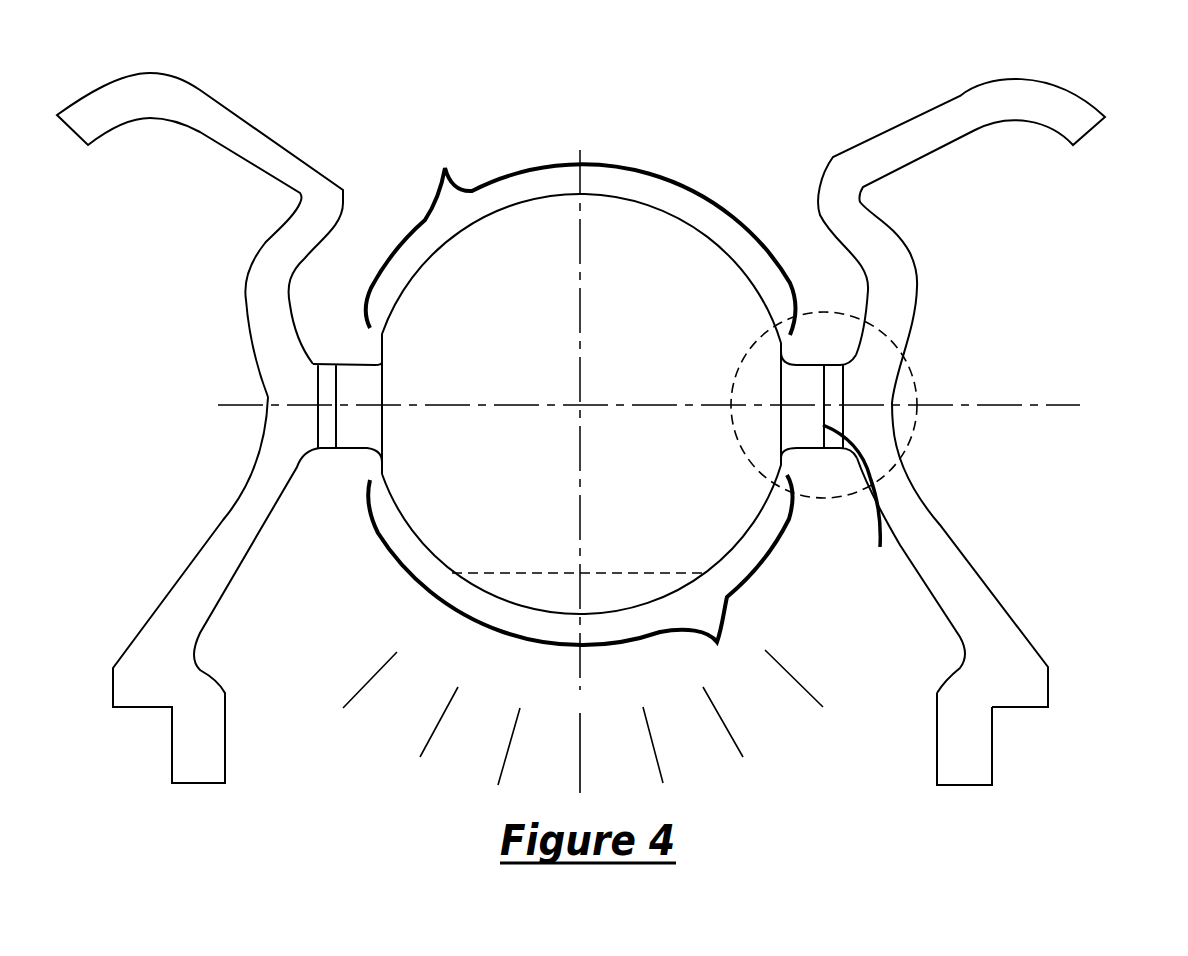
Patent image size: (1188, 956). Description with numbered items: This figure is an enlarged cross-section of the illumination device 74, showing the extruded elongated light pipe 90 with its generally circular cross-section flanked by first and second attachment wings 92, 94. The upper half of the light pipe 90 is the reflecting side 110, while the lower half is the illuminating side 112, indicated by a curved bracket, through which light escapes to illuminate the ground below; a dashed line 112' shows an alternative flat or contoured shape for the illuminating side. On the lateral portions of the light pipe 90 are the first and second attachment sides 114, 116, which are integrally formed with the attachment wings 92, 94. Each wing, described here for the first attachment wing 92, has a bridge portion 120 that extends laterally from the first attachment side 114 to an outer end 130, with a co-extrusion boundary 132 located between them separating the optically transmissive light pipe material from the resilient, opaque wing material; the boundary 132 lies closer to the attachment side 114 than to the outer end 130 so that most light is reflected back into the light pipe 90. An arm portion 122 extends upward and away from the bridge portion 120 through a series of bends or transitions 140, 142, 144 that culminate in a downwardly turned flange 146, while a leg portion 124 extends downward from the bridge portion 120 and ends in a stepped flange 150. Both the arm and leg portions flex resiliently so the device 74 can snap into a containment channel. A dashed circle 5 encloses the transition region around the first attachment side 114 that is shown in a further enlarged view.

The illumination device 74 is at (716, 81).
The elongated light pipe 90 is at (614, 258).
The first attachment wing 92 is at (857, 210).
The second attachment wing 94 is at (227, 535).
The reflecting side 110 is at (581, 236).
The illuminating side 112 is at (580, 574).
The alternative illuminating side shape 112' is at (580, 559).
The first attachment side 114 is at (780, 390).
The second attachment side 116 is at (382, 390).
The bridge portion 120 is at (810, 448).
The arm portion 122 is at (985, 87).
The leg portion 124 is at (985, 612).
The outer end 130 is at (843, 380).
The co-extrusion boundary 132 is at (859, 506).
The bend 140 is at (898, 275).
The bend 142 is at (835, 172).
The bend 144 is at (1025, 110).
The downwardly turned flange 146 is at (1092, 112).
The stepped flange 150 is at (963, 755).
The detail view circle (FIG. 5) 5 is at (912, 433).